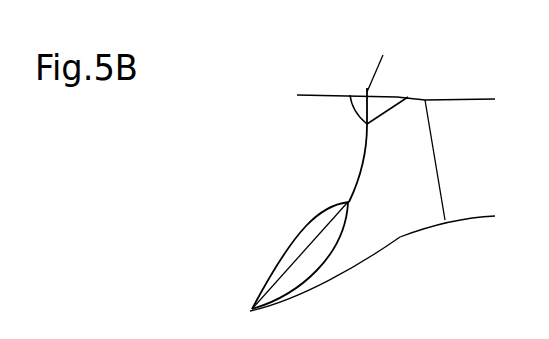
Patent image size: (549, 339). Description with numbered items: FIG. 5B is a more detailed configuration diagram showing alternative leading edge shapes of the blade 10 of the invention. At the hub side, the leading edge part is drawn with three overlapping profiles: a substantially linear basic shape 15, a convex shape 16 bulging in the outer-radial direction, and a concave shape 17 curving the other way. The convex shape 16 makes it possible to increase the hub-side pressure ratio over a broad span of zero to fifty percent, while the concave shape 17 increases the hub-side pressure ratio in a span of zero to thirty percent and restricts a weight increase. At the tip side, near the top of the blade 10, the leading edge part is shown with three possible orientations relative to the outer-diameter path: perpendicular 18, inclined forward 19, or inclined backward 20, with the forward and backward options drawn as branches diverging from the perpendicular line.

The blade 10 is at (373, 176).
The substantially linear basic shape 15 is at (302, 247).
The convex shape 16 is at (297, 230).
The concave shape 17 is at (328, 267).
The perpendicular 18 is at (387, 57).
The inclined forward 19 is at (350, 100).
The inclined backward 20 is at (373, 107).